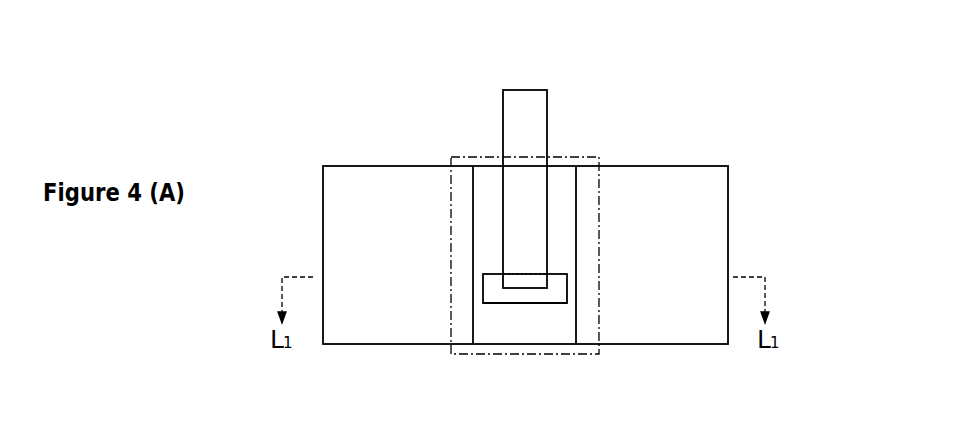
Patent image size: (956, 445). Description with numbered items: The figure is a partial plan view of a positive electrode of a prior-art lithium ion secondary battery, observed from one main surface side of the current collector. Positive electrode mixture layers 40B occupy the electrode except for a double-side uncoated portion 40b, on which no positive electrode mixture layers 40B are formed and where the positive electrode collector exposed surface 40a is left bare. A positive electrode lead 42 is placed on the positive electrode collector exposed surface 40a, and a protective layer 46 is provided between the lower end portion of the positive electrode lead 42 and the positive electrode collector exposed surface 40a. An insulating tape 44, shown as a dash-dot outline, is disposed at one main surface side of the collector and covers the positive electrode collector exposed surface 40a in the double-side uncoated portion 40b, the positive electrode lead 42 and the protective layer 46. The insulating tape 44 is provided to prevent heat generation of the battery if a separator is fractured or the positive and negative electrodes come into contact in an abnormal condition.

The positive electrode mixture layer 40B is at (706, 203).
The double-side uncoated portion 40b is at (489, 193).
The positive electrode lead 42 is at (533, 118).
The protective layer 46 is at (560, 298).
The positive electrode collector exposed surface 40a is at (496, 311).
The insulating tape 44 is at (598, 348).